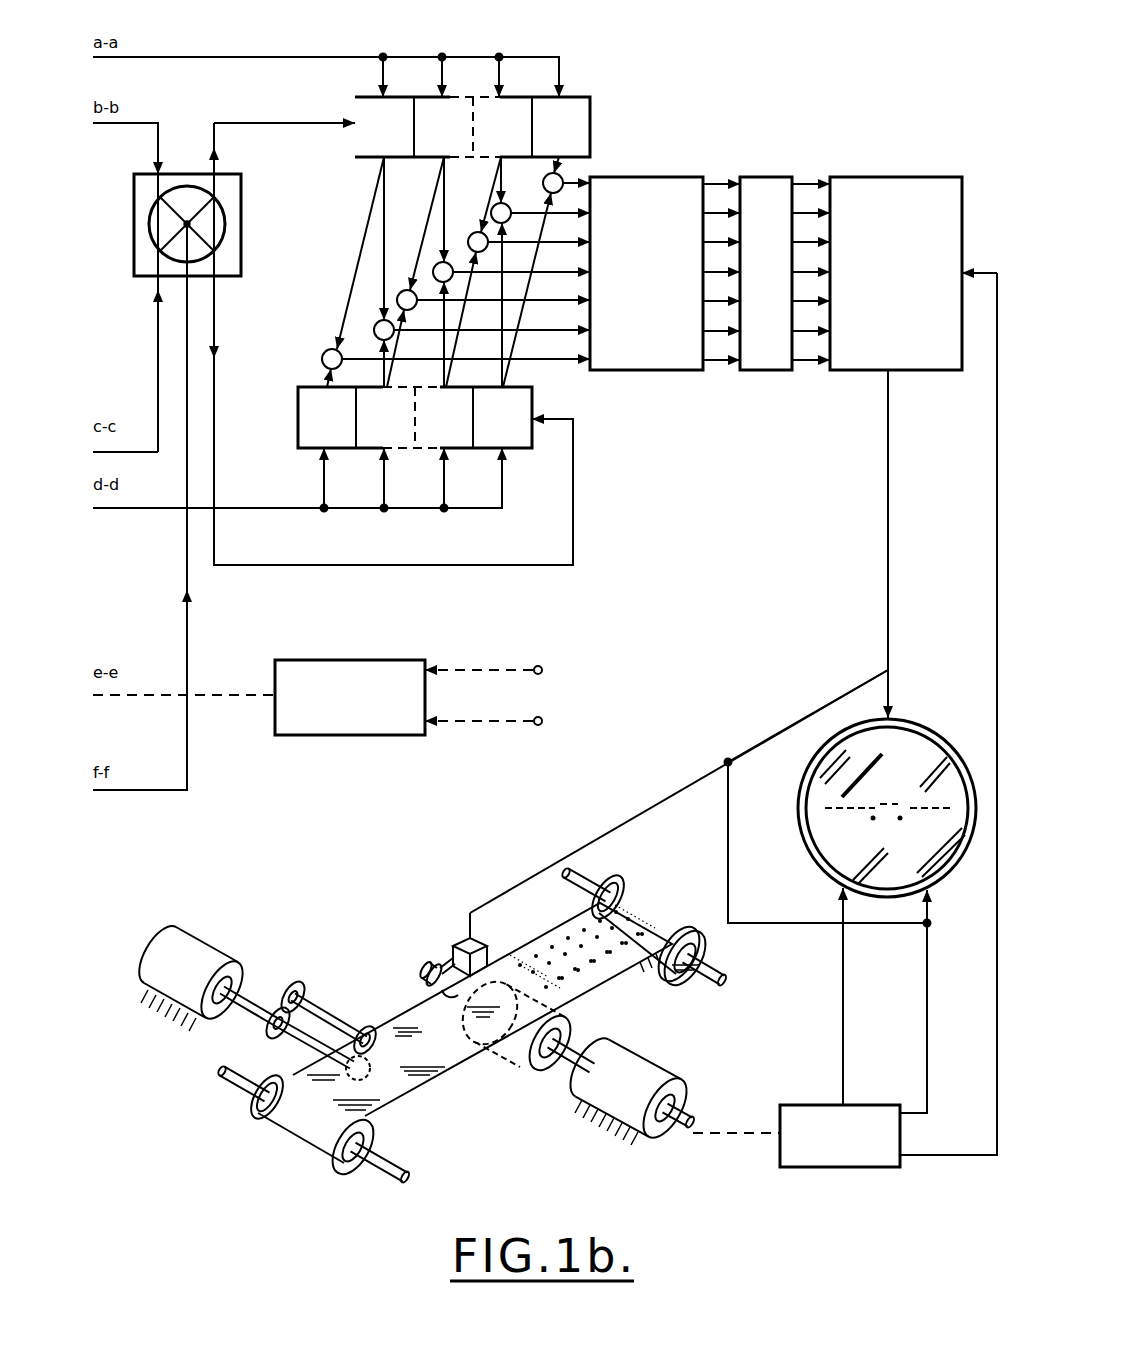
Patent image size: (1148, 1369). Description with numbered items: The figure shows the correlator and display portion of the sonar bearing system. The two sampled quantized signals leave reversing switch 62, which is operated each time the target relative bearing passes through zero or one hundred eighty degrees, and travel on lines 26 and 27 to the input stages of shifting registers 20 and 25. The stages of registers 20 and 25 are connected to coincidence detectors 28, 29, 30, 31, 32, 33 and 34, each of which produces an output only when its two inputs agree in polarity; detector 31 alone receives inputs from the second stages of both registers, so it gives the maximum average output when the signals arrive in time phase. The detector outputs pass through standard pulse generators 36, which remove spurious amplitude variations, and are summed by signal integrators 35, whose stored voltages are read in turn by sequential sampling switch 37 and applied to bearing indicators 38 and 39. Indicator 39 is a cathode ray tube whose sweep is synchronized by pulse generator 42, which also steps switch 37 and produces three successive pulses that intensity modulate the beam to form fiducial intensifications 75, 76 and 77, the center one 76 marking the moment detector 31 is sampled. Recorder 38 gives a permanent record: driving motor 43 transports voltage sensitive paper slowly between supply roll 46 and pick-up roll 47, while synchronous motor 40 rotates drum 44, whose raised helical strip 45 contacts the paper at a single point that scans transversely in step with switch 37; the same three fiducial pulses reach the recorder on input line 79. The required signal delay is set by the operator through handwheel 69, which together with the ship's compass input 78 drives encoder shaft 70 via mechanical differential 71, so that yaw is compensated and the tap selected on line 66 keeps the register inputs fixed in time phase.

The shifting register 20 is at (486, 87).
The shifting register 25 is at (422, 487).
The line 26 is at (300, 123).
The line 27 is at (573, 487).
The coincidence detector 28 is at (324, 364).
The coincidence detector 29 is at (375, 335).
The coincidence detector 30 is at (402, 291).
The coincidence detector 31 is at (435, 264).
The coincidence detector 32 is at (472, 236).
The coincidence detector 33 is at (508, 206).
The coincidence detector 34 is at (562, 180).
The signal integrator 35 is at (762, 177).
The standard pulse generator 36 is at (656, 177).
The sequential sampling switch 37 is at (892, 177).
The recorder 38 is at (375, 973).
The indicator 39 is at (798, 800).
The synchronous motor 40 is at (667, 1077).
The pulse generator 42 is at (812, 1167).
The driving motor 43 is at (205, 932).
The drum 44 is at (537, 1070).
The raised helical strip 45 is at (503, 1057).
The supply roll 46 is at (262, 1127).
The pick-up roll 47 is at (638, 892).
The reversing switch 62 is at (241, 222).
The line 66 is at (158, 330).
The handwheel 69 is at (544, 675).
The encoder shaft 70 is at (222, 695).
The mechanical differential 71 is at (353, 735).
The intensification 75 is at (545, 965).
The intensification 76 is at (560, 966).
The intensification 77 is at (571, 978).
The ship's compass input 78 is at (543, 724).
The input line 79 is at (517, 887).